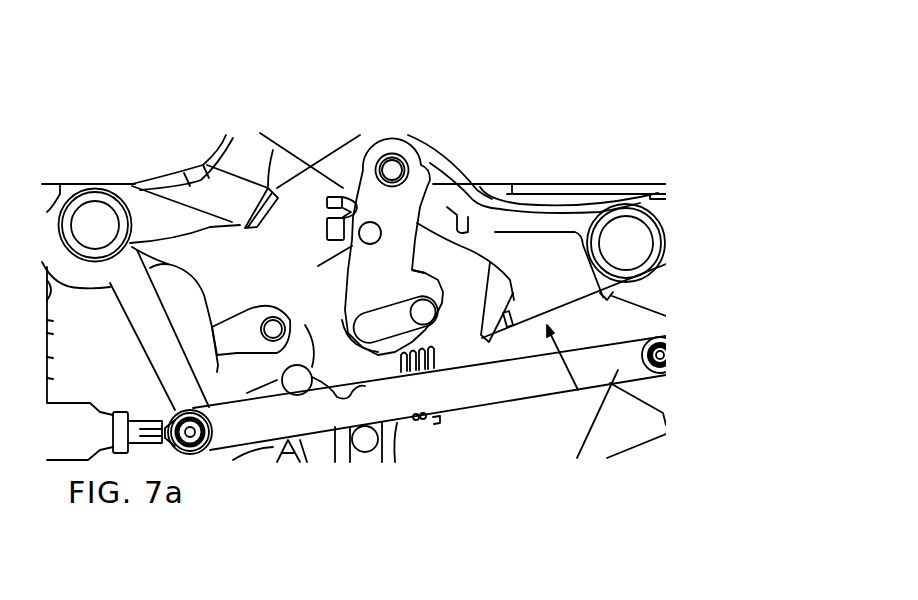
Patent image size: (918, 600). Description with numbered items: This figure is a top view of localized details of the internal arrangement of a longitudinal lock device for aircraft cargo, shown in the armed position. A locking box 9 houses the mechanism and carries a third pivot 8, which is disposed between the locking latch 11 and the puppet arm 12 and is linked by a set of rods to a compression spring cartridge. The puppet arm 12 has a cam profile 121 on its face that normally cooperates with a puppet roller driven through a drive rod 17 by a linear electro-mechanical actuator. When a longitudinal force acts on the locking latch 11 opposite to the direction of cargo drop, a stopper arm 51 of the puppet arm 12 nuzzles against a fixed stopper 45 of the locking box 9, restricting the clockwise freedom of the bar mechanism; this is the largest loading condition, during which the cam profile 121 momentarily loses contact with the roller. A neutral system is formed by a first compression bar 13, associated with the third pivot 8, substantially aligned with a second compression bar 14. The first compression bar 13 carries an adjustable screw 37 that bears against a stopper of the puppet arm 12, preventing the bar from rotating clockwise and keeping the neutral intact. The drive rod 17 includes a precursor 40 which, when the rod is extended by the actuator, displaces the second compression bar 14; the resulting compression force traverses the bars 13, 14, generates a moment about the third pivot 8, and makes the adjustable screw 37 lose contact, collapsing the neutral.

The third pivot 8 is at (392, 170).
The locking box 9 is at (600, 184).
The locking latch 11 is at (327, 513).
The puppet arm 12 is at (448, 163).
The first compression bar 13 is at (420, 257).
The second compression bar 14 is at (403, 438).
The drive rod 17 is at (524, 385).
The adjustable screw 37 is at (323, 205).
The precursor 40 is at (291, 388).
The fixed stopper 45 is at (462, 212).
The stopper arm 51 is at (483, 232).
The cam profile 121 is at (615, 392).